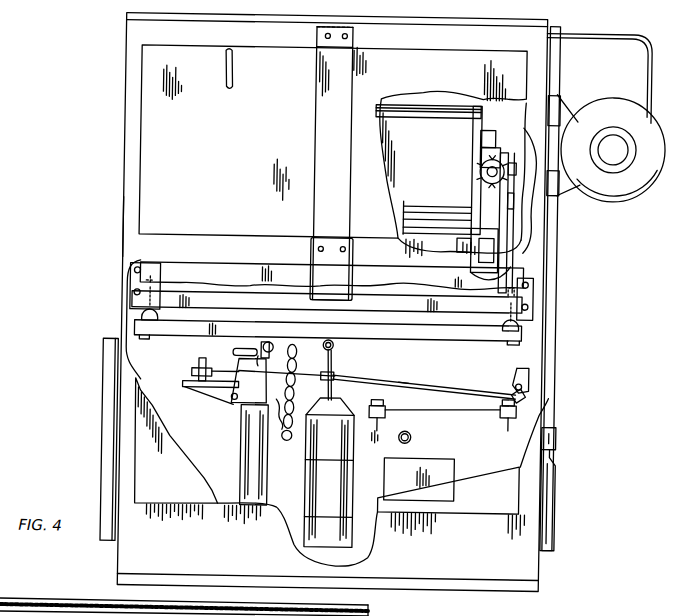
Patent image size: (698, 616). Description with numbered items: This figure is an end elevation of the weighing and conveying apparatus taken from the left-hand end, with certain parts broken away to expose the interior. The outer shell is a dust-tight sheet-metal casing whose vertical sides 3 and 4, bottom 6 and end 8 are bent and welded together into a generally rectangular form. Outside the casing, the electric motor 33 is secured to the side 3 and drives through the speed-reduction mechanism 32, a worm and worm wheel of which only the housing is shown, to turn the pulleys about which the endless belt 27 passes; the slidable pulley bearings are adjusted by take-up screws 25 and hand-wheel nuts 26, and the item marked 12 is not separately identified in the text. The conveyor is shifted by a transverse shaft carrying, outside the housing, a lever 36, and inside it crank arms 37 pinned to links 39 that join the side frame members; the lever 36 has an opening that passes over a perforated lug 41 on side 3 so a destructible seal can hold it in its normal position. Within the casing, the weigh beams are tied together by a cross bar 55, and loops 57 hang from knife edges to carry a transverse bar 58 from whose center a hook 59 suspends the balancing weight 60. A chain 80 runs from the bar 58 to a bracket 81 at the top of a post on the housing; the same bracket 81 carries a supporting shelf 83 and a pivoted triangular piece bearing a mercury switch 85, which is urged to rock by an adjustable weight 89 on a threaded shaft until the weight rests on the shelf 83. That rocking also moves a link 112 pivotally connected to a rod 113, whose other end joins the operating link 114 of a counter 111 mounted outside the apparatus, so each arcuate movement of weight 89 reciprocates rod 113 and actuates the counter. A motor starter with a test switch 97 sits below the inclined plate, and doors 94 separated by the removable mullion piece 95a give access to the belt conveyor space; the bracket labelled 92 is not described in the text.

The vertical side 3 is at (548, 284).
The vertical side 4 is at (119, 231).
The bottom 6 is at (450, 590).
The end 8 is at (128, 34).
The motor assembly 12 is at (426, 215).
The take-up screw 25 is at (485, 169).
The hand-wheel nut 26 is at (478, 186).
The endless belt 27 is at (437, 106).
The speed-reduction mechanism 32 is at (633, 61).
The electric motor 33 is at (620, 185).
The lever 36 is at (559, 496).
The crank arm 37 is at (519, 215).
The link 39 is at (533, 162).
The perforated lug 41 is at (560, 436).
The cross bar 55 is at (196, 294).
The loop 57 is at (130, 313).
The transverse bar 58 is at (439, 343).
The hook 59 is at (333, 365).
The balancing weight 60 is at (314, 528).
The chain 80 is at (292, 441).
The bracket 81 is at (249, 417).
The supporting shelf 83 is at (209, 395).
The mercury switch 85 is at (283, 376).
The adjustable weight 89 is at (206, 364).
The guide bracket 92 is at (317, 258).
The door 94 is at (142, 143).
The mullion piece 95a is at (322, 150).
The switch 97 is at (413, 433).
The counter 111 is at (516, 375).
The link 112 is at (278, 354).
The rod 113 is at (400, 372).
The operating link 114 is at (520, 386).